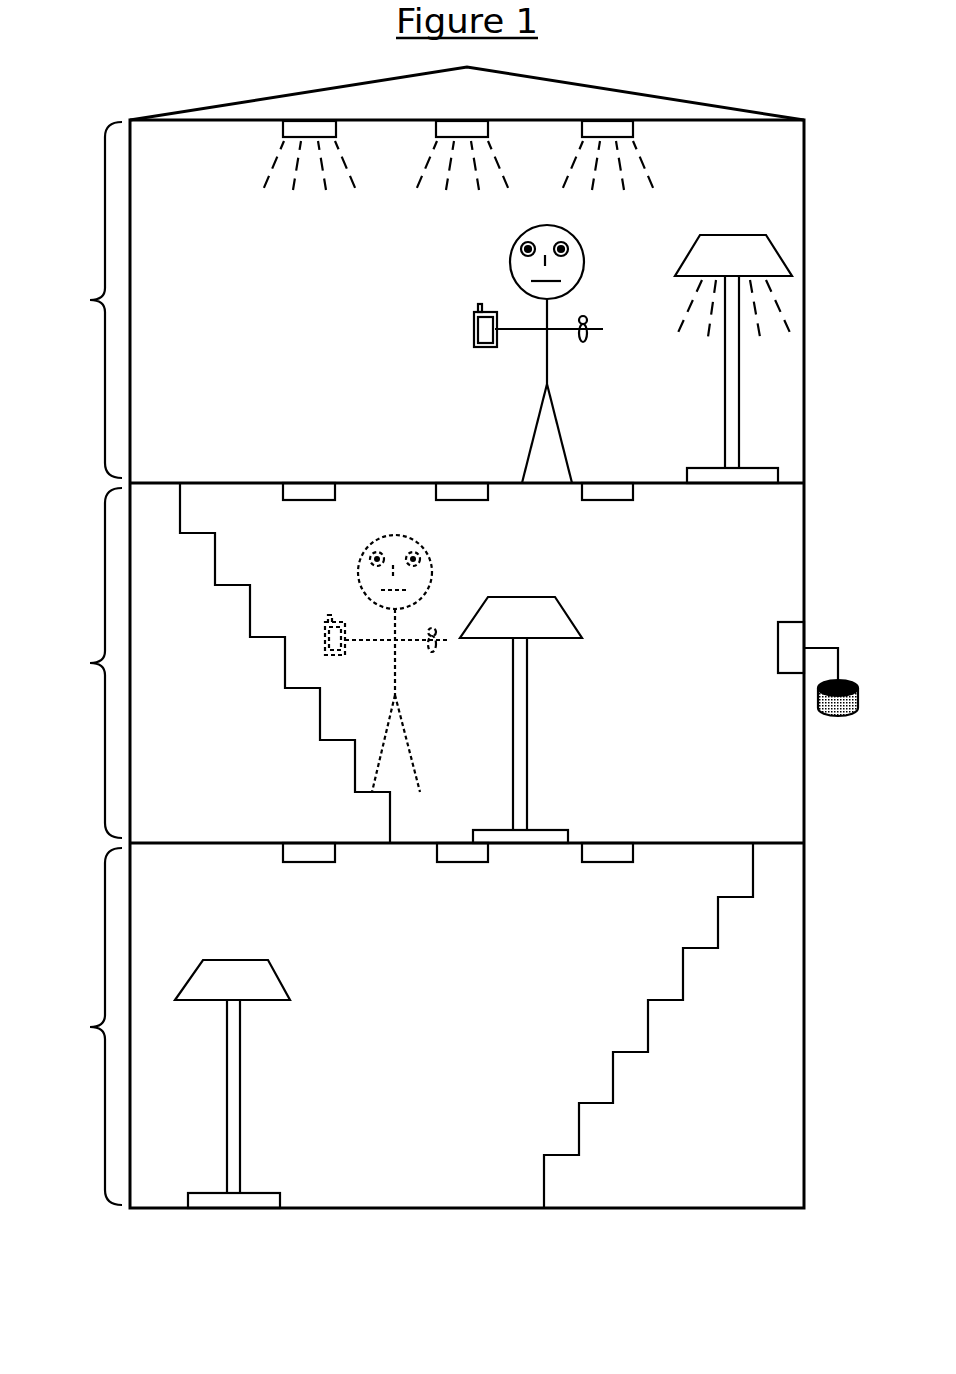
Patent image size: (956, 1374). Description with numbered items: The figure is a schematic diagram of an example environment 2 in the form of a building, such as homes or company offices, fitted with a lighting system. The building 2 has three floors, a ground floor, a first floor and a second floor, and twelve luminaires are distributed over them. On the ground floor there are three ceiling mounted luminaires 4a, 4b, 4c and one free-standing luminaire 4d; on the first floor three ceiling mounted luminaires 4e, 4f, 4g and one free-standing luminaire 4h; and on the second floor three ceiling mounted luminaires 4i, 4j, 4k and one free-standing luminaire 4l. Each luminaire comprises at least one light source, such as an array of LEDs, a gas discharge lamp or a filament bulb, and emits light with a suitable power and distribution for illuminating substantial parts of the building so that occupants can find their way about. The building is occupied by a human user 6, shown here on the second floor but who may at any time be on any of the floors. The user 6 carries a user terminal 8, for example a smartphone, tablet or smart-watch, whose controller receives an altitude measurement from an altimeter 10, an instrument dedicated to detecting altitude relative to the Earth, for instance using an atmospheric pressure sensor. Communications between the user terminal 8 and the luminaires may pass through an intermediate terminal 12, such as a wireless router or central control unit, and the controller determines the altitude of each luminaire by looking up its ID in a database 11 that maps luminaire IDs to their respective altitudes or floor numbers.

The environment 2 is at (676, 106).
The ceiling mounted luminaire 4a is at (305, 862).
The ceiling mounted luminaire 4b is at (460, 862).
The ceiling mounted luminaire 4c is at (612, 862).
The free-standing luminaire 4d is at (285, 986).
The ceiling mounted luminaire 4e is at (305, 500).
The ceiling mounted luminaire 4f is at (462, 500).
The ceiling mounted luminaire 4g is at (612, 500).
The free-standing luminaire 4h is at (570, 622).
The ceiling mounted luminaire 4i is at (312, 119).
The ceiling mounted luminaire 4j is at (472, 119).
The ceiling mounted luminaire 4k is at (600, 119).
The free-standing luminaire 4l is at (720, 235).
The user 6 is at (510, 256).
The user terminal 8 is at (474, 329).
The altimeter 10 is at (586, 318).
The database 11 is at (842, 718).
The intermediate terminal 12 is at (778, 652).